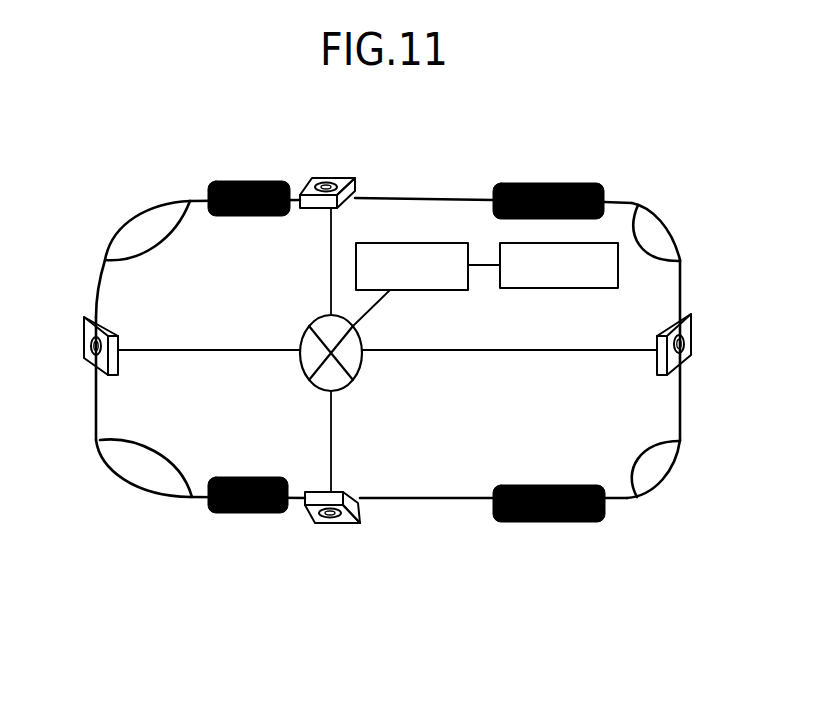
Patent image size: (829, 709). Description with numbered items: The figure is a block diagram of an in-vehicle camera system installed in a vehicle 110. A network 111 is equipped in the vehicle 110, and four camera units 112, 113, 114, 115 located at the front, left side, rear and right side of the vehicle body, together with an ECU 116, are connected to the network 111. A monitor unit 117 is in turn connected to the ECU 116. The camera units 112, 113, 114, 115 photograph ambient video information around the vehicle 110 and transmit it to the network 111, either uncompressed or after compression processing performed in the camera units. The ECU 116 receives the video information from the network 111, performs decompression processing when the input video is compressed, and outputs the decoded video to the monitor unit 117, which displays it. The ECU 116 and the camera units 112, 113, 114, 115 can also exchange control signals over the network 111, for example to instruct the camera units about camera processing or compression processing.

The vehicle 110 is at (433, 197).
The network 111 is at (355, 380).
The camera unit 112 is at (323, 178).
The camera unit 113 is at (83, 353).
The camera unit 114 is at (320, 525).
The camera unit 115 is at (687, 315).
The ECU 116 is at (450, 290).
The monitor unit 117 is at (583, 288).